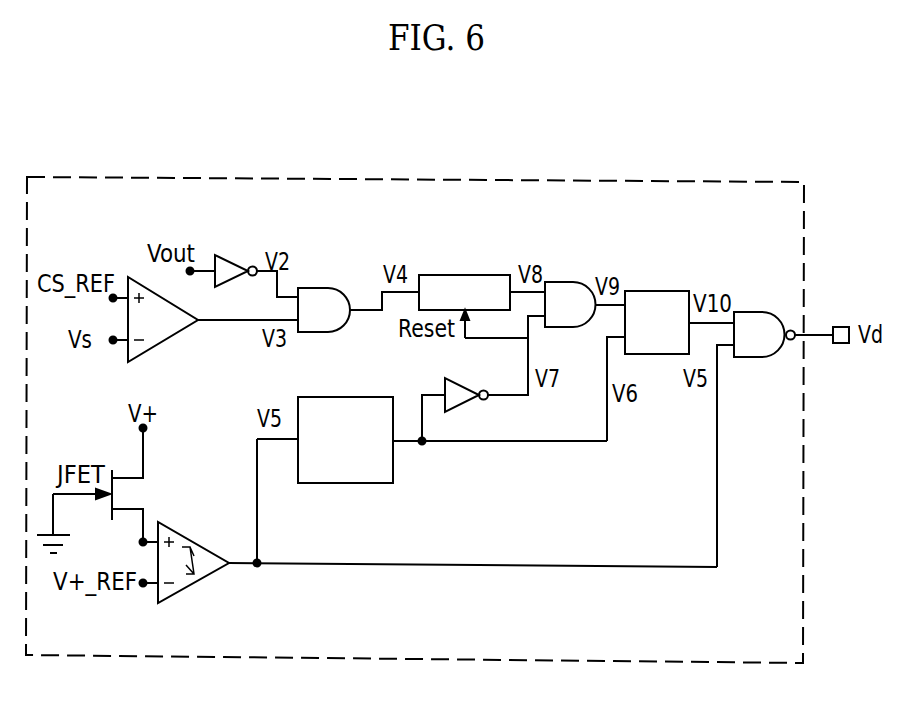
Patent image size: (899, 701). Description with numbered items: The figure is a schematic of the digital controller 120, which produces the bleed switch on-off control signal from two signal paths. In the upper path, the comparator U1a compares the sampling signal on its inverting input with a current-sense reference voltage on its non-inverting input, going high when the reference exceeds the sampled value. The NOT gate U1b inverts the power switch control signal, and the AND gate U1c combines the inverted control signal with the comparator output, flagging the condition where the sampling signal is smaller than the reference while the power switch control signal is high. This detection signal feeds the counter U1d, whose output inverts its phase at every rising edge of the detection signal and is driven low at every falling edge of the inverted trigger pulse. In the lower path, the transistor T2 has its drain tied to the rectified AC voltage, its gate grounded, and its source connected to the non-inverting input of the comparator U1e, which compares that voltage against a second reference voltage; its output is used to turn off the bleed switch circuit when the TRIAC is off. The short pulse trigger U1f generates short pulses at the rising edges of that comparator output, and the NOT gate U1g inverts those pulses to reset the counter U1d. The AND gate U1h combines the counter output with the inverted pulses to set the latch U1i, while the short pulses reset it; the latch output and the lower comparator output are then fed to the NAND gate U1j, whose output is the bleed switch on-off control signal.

The digital controller 120 is at (610, 181).
The comparator U1a is at (154, 330).
The NOT gate U1b is at (232, 268).
The AND gate U1c is at (339, 321).
The counter U1d is at (464, 275).
The comparator U1e is at (185, 573).
The short pulse trigger U1f is at (345, 455).
The NOT gate U1g is at (475, 372).
The AND gate U1h is at (563, 280).
The latch U1i is at (660, 356).
The NAND gate U1j is at (764, 353).
The transistor T2 is at (116, 484).